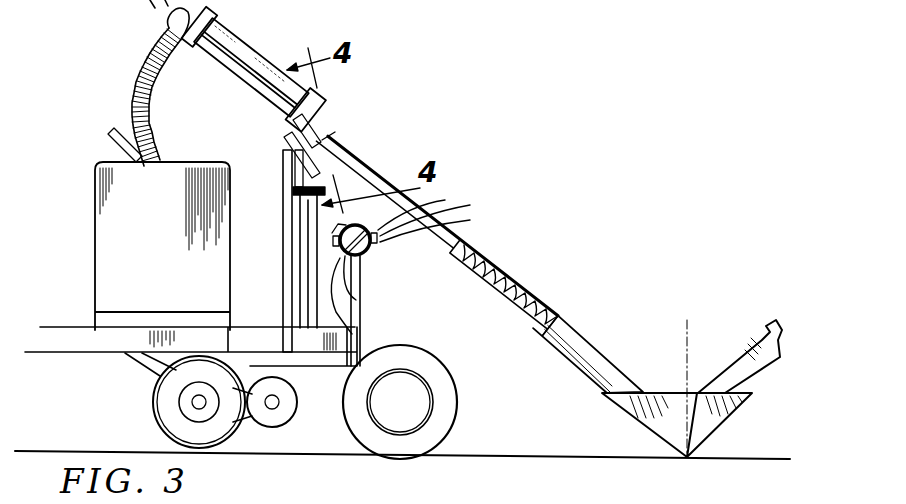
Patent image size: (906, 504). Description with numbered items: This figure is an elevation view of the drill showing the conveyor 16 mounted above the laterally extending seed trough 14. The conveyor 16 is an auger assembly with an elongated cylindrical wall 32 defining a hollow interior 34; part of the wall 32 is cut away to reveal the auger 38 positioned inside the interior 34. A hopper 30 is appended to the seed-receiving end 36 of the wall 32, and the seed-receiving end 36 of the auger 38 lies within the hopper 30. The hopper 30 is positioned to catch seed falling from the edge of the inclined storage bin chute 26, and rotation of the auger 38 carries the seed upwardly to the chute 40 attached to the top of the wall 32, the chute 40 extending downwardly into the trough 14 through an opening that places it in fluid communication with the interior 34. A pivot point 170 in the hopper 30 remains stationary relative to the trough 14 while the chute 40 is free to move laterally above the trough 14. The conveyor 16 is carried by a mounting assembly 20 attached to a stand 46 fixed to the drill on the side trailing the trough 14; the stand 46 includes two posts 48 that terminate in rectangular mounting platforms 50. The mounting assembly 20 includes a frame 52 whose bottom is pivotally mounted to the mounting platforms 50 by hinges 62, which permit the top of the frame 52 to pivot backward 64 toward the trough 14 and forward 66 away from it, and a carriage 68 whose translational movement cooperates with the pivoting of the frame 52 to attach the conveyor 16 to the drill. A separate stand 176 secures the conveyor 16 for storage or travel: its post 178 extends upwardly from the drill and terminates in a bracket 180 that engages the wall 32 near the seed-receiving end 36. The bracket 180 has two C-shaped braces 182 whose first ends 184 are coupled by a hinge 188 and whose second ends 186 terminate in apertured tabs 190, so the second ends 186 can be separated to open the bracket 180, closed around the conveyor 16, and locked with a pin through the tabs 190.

The seed trough 14 is at (140, 241).
The chute 40 is at (133, 63).
The backward pivot direction 64 is at (265, 152).
The forward pivot direction 66 is at (348, 158).
The carriage 68 is at (340, 168).
The hinges 62 is at (292, 190).
The frame 52 is at (280, 150).
The mounting assembly 20 is at (277, 183).
The posts 48 is at (298, 275).
The mounting platforms 50 is at (303, 250).
The stand 176 is at (358, 330).
The stand 46 is at (310, 318).
The post 178 is at (360, 332).
The hinge 188 is at (357, 224).
The bracket 180 is at (366, 258).
The C-shaped braces 182 is at (415, 198).
The first ends 184 is at (364, 258).
The second ends 186 is at (452, 203).
The tabs 190 is at (445, 222).
The conveyor 16 is at (480, 262).
The hollow interior 34 is at (533, 287).
The cylindrical wall 32 is at (547, 310).
The auger 38 is at (520, 251).
The seed-receiving end 36 is at (593, 360).
The hopper 30 is at (667, 422).
The pivot point 170 is at (687, 457).
The storage bin chute 26 is at (757, 342).